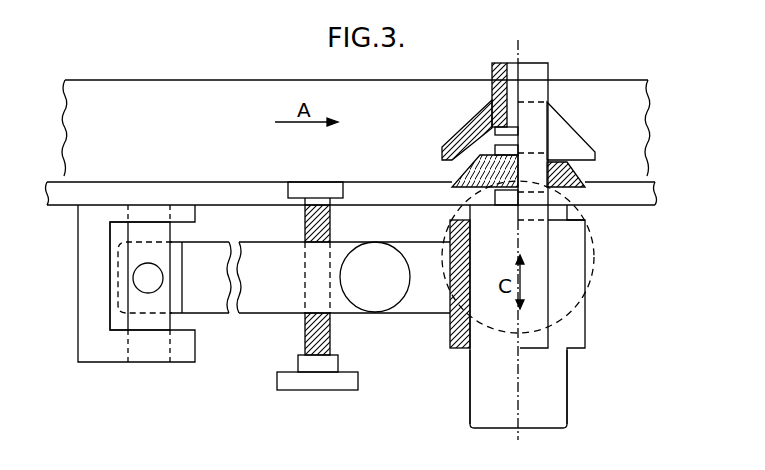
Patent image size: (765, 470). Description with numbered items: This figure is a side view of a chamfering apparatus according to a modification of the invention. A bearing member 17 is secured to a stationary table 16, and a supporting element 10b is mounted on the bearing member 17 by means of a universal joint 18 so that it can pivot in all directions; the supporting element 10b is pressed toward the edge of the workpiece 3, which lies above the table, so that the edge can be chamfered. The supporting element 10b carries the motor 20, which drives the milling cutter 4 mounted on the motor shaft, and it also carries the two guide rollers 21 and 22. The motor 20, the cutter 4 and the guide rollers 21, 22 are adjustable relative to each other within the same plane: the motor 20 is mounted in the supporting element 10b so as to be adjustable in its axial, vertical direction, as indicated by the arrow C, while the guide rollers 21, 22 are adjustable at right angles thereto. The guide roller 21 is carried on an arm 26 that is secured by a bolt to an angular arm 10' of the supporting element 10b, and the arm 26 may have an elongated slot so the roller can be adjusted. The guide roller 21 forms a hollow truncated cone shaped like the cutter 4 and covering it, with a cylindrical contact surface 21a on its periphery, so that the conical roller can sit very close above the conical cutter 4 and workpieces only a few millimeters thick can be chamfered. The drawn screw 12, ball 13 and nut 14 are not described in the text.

The workpiece 3 is at (172, 80).
The stationary table 16 is at (75, 195).
The bearing member 17 is at (102, 348).
The universal joint 18 is at (148, 282).
The supporting element 10b is at (250, 302).
The adjusting screw 12 is at (320, 335).
The ball 13 is at (387, 302).
The nut 14 is at (302, 180).
The guide roller 21 is at (477, 120).
The cylindrical contact surface 21a is at (442, 155).
The arm 26 is at (537, 73).
The milling cutter 4 is at (568, 175).
The guide roller 22 is at (595, 263).
The angular arm 10' is at (554, 309).
The motor 20 is at (483, 387).